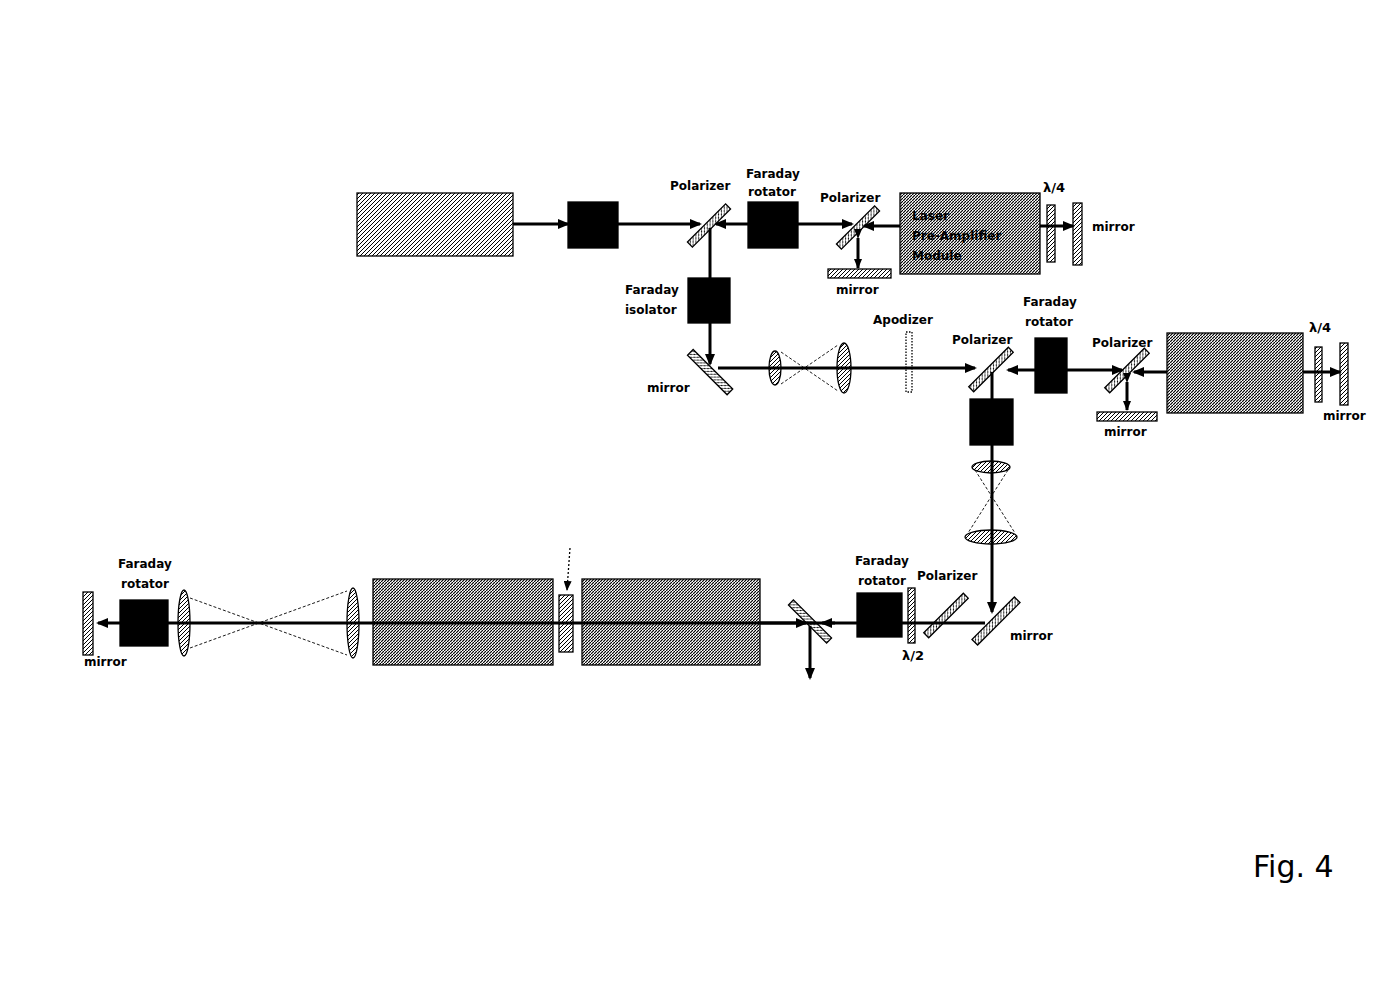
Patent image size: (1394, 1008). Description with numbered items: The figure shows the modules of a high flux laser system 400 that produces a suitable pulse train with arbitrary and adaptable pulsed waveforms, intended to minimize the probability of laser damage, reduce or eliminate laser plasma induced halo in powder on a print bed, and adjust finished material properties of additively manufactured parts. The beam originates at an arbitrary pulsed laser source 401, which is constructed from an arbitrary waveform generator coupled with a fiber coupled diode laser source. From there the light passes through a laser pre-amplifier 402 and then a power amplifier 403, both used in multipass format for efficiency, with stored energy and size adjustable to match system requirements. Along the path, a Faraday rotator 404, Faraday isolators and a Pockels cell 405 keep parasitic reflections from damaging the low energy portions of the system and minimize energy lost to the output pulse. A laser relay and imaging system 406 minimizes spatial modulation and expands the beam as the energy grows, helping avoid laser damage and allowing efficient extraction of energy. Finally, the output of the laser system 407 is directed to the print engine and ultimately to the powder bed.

The high flux laser system 400 is at (262, 88).
The arbitrary pulsed laser source 401 is at (435, 224).
The laser pre-amplifier 402 is at (1209, 449).
The power amplifier 403 is at (566, 588).
The Faraday rotator 404 is at (600, 279).
The Pockels cell 405 is at (888, 435).
The laser relay and imaging system 406 is at (1040, 528).
The output of the laser system 407 is at (804, 662).